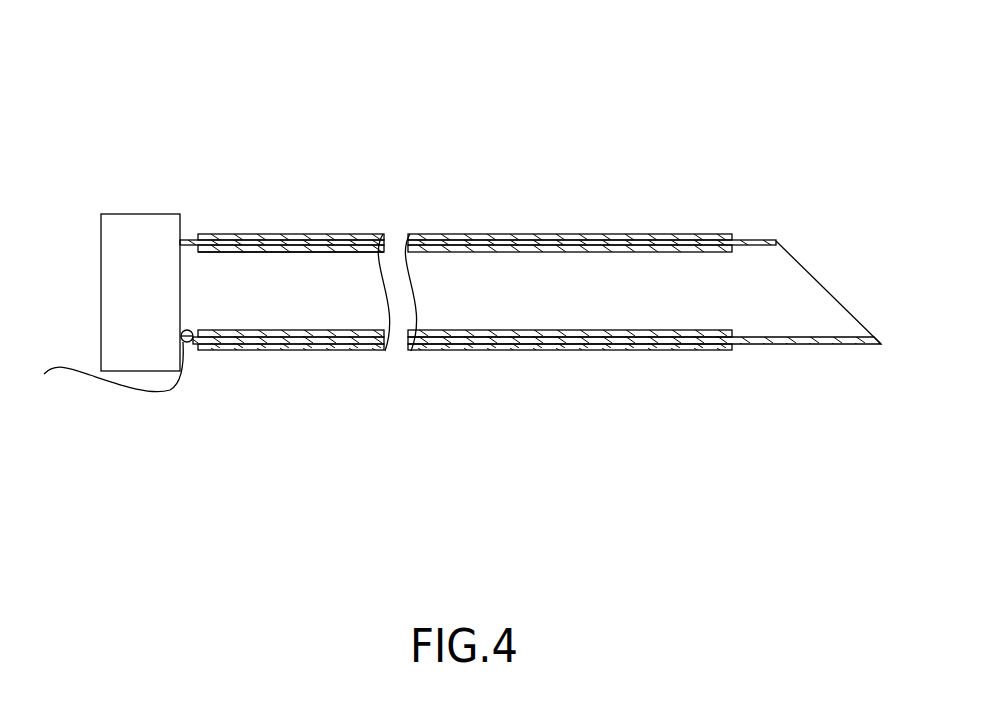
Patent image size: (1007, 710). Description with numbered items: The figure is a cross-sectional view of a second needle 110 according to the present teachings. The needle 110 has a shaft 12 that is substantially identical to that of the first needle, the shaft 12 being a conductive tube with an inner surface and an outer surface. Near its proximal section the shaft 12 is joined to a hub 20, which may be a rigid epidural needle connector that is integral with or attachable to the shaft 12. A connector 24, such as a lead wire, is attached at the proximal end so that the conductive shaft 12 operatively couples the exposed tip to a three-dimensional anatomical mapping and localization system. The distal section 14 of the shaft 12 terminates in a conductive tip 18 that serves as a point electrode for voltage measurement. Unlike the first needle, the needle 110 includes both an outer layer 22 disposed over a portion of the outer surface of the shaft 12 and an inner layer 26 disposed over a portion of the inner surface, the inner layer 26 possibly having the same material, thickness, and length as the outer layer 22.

The second needle 110 is at (607, 108).
The shaft 12 is at (743, 238).
The distal section 14 is at (760, 243).
The conductive tip 18 is at (832, 294).
The hub 20 is at (101, 276).
The outer layer 22 is at (688, 238).
The connector 24 is at (108, 379).
The inner layer 26 is at (292, 252).